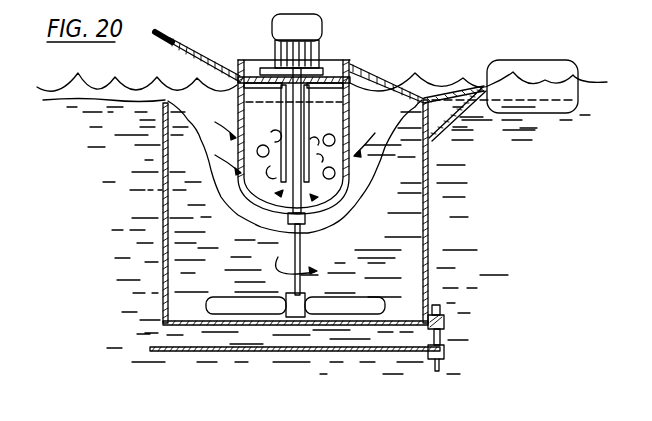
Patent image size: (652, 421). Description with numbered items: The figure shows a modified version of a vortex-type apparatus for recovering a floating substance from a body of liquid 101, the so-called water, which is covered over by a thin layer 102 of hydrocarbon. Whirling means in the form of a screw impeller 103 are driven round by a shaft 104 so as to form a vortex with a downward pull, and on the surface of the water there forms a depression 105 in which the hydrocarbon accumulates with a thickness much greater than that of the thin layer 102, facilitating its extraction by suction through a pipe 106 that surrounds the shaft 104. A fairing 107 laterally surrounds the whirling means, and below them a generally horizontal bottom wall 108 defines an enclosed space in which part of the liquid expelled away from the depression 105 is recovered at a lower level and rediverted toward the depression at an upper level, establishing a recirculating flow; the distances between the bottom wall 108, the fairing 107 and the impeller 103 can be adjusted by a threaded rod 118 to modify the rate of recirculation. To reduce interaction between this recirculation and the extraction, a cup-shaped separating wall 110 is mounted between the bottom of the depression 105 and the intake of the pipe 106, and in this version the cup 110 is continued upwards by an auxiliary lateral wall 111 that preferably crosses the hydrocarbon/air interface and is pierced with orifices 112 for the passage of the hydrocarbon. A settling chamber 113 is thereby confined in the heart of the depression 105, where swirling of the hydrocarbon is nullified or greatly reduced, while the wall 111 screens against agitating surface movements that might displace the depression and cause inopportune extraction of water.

The body of liquid 101 is at (492, 137).
The thin layer 102 is at (97, 90).
The screw impeller 103 is at (221, 300).
The shaft 104 is at (296, 262).
The depression 105 is at (372, 126).
The pipe 106 is at (308, 105).
The fairing 107 is at (433, 250).
The bottom wall 108 is at (150, 348).
The separating wall 110 is at (348, 192).
The auxiliary lateral wall 111 is at (352, 107).
The orifices 112 is at (350, 160).
The settling chamber 113 is at (250, 110).
The threaded rod 118 is at (442, 335).